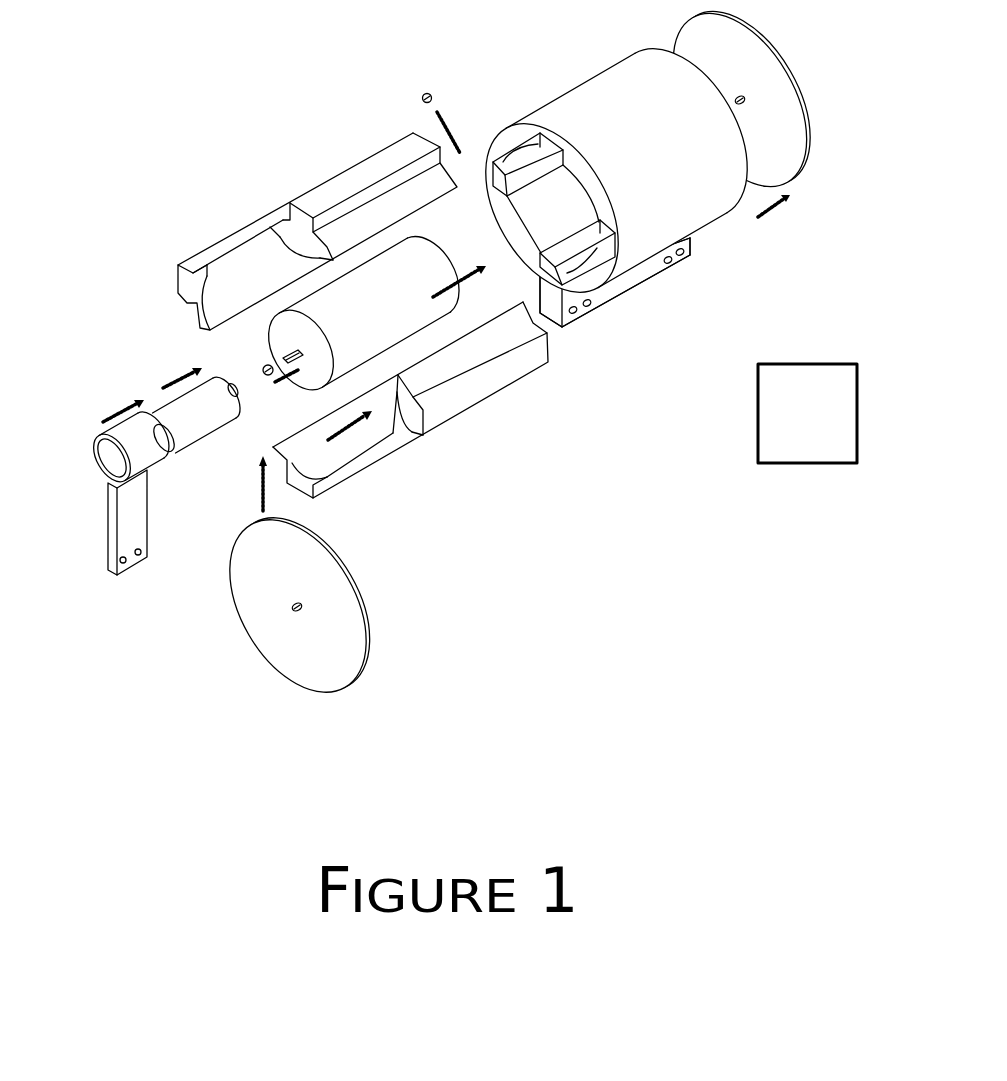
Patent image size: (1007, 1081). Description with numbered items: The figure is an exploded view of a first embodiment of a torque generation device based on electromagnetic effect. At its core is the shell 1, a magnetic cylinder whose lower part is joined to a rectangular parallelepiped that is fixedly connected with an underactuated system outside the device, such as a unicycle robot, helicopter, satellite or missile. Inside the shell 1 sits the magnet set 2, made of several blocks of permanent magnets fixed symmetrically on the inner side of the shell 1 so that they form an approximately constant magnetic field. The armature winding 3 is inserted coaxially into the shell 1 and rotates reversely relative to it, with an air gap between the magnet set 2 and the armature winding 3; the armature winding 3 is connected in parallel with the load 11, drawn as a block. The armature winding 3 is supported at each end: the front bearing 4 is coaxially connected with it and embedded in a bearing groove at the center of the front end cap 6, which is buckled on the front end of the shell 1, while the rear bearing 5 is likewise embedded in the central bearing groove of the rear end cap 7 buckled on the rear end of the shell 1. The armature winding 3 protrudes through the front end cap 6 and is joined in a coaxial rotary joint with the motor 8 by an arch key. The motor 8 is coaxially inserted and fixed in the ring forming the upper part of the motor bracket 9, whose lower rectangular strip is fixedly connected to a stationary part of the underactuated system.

The shell 1 is at (635, 135).
The magnet set 2 is at (512, 383).
The armature winding 3 is at (390, 298).
The front bearing 4 is at (262, 365).
The rear bearing 5 is at (425, 95).
The front end cap 6 is at (307, 640).
The rear end cap 7 is at (763, 120).
The motor 8 is at (195, 412).
The motor bracket 9 is at (127, 517).
The load 11 is at (807, 413).